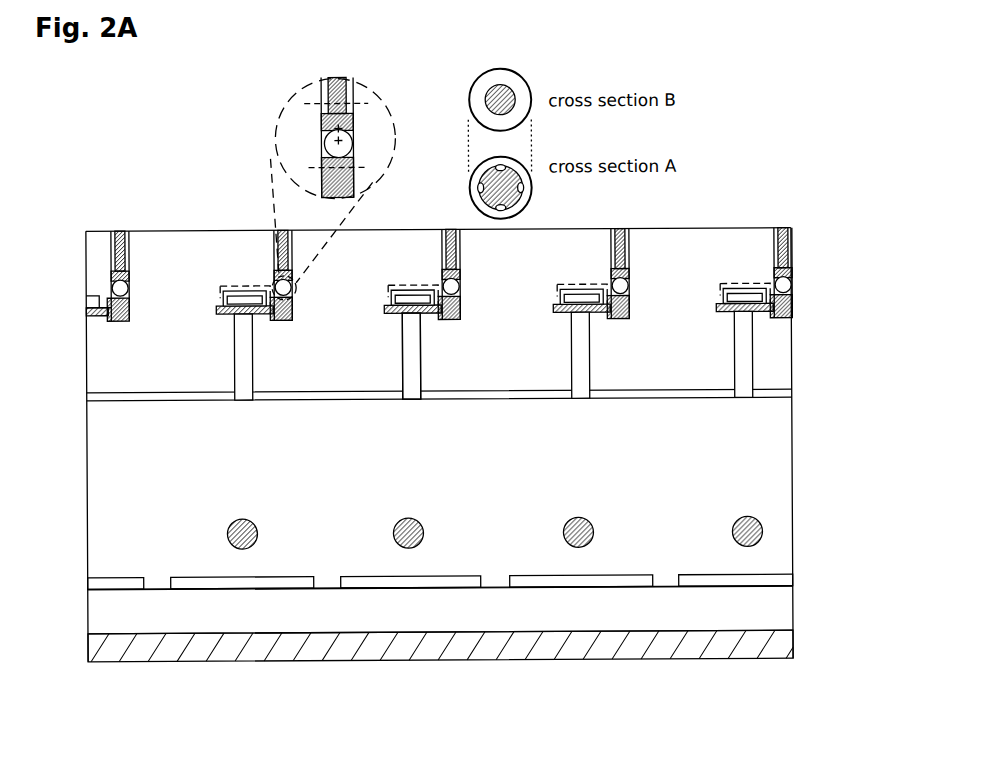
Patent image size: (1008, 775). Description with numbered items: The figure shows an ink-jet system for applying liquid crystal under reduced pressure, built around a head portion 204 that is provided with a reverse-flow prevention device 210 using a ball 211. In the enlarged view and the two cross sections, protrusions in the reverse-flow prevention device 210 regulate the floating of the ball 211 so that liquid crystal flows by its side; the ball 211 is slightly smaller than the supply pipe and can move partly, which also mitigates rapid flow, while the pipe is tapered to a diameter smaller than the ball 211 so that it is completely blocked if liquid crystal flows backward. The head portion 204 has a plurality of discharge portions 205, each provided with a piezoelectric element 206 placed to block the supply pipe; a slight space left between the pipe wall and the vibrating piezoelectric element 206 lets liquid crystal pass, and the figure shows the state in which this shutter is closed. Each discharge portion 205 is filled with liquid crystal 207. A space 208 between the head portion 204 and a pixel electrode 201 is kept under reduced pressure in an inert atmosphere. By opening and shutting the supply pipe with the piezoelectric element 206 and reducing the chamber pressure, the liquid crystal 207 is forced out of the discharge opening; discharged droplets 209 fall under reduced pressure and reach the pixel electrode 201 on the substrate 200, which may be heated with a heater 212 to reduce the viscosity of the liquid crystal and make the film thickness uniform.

The substrate 200 is at (360, 610).
The pixel electrode 201 is at (200, 588).
The head portion 204 is at (678, 229).
The discharge portion 205 is at (455, 224).
The piezoelectric element 206 is at (410, 286).
The liquid crystal 207 is at (421, 372).
The space 208 is at (92, 430).
The discharged droplet 209 is at (420, 524).
The reverse-flow prevention device 210 is at (280, 125).
The ball 211 is at (327, 142).
The heater 212 is at (510, 655).